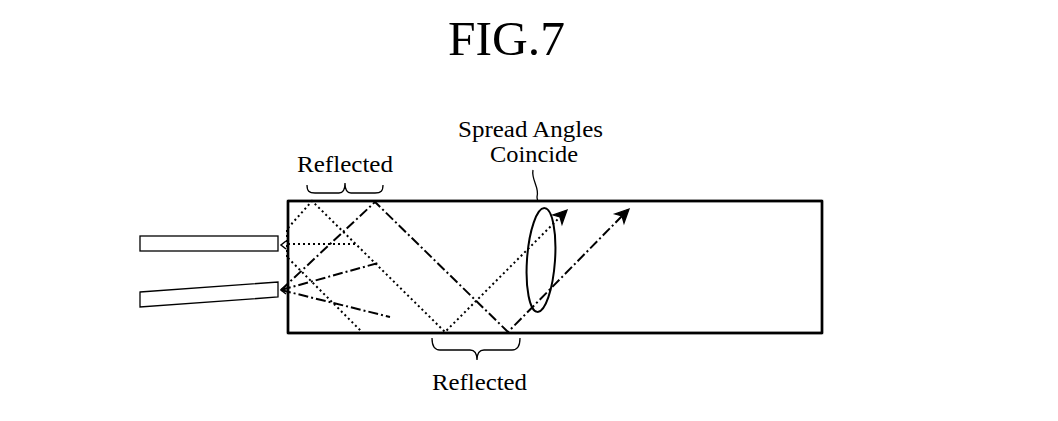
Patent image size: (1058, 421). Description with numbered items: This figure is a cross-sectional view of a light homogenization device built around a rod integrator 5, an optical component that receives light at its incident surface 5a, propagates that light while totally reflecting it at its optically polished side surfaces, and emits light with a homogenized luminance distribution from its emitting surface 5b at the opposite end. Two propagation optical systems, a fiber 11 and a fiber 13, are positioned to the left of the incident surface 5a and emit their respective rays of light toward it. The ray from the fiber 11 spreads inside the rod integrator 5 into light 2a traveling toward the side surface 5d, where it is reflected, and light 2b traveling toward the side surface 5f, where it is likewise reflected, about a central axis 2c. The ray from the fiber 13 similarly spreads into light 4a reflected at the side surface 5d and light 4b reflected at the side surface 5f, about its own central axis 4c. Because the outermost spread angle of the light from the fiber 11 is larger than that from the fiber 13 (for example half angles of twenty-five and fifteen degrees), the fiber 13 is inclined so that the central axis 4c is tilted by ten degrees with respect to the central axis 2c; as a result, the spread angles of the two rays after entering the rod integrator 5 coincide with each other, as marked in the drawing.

The rod integrator 5 is at (610, 342).
The incident surface 5a is at (287, 321).
The emitting surface 5b is at (823, 270).
The side surface 5d is at (748, 200).
The side surface 5f is at (733, 334).
The fiber 11 is at (185, 236).
The fiber 13 is at (172, 305).
The light traveling toward the side surface 5d 2a is at (302, 209).
The light traveling toward the side surface 5f 2b is at (348, 323).
The central axis of the ray of light 2 2c is at (294, 242).
The light traveling toward the side surface 5d 4a is at (368, 211).
The light traveling toward the side surface 5f 4b is at (318, 305).
The central axis of the ray of light 4 4c is at (330, 278).